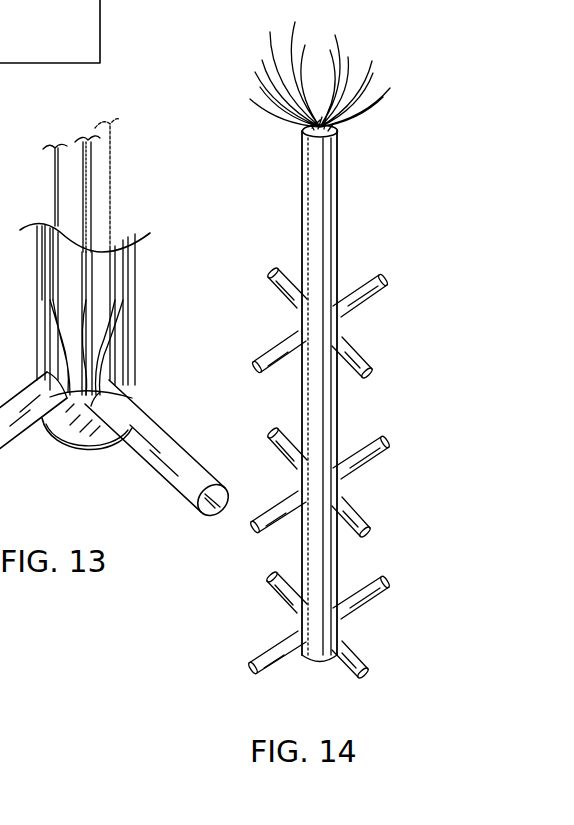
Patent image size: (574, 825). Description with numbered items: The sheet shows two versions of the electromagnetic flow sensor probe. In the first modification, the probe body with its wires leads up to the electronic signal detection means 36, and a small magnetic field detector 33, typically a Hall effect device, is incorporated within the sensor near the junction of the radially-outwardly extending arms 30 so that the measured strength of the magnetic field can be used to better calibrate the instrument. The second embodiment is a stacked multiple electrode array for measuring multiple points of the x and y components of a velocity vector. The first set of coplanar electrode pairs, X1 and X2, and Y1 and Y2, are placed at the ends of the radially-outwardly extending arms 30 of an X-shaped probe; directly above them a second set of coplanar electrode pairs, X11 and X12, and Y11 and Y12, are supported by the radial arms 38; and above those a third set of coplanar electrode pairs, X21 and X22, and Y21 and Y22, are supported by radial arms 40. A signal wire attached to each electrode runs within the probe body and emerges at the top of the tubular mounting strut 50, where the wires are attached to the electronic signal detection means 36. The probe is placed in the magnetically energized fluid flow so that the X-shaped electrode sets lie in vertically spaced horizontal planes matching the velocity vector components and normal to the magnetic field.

In FIG. 13, the radially-outwardly extending arm 30 is at (178, 452).
In FIG. 14, the radially-outwardly extending arm 30 is at (282, 650).
In FIG. 13, the magnetic field detector 33 is at (87, 452).
In FIG. 13, the electronic signal detection means 36 is at (17, 64).
In FIG. 14, the radial arm 38 is at (338, 512).
In FIG. 14, the radial arm 40 is at (340, 353).
In FIG. 14, the tubular mounting strut 50 is at (331, 178).
In FIG. 14, the electrode X1 is at (252, 668).
In FIG. 14, the electrode X2 is at (387, 578).
In FIG. 14, the electrode X11 is at (264, 514).
In FIG. 14, the electrode X12 is at (386, 434).
In FIG. 14, the electrode X21 is at (254, 360).
In FIG. 14, the electrode X22 is at (382, 274).
In FIG. 14, the electrode Y1 is at (366, 662).
In FIG. 14, the electrode Y2 is at (271, 580).
In FIG. 14, the electrode Y11 is at (364, 510).
In FIG. 14, the electrode Y12 is at (276, 428).
In FIG. 14, the electrode Y21 is at (364, 352).
In FIG. 14, the electrode Y22 is at (271, 270).